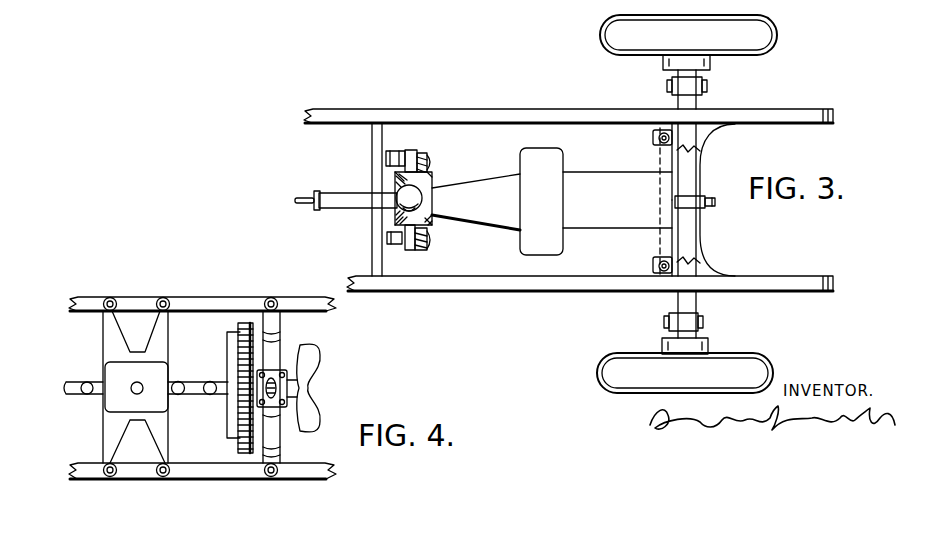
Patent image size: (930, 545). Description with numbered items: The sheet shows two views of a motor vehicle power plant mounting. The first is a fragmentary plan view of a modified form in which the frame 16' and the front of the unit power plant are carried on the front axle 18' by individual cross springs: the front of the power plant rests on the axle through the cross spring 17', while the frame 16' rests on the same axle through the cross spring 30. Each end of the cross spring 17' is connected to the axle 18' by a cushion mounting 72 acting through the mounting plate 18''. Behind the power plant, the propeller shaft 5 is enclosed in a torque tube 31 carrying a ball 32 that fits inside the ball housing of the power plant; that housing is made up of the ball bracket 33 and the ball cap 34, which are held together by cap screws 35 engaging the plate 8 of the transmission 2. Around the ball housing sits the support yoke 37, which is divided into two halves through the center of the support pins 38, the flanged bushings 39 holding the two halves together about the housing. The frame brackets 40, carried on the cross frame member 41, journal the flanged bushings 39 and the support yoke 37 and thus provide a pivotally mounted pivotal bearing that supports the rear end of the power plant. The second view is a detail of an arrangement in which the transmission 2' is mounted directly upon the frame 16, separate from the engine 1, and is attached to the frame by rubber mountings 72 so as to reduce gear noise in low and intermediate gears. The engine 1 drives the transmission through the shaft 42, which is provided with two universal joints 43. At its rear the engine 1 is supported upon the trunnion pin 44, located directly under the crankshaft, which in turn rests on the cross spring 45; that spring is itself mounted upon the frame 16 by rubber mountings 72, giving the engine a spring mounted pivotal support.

In FIG. 3, the engine 1 is at (588, 222).
In FIG. 4, the engine 1 is at (321, 400).
In FIG. 3, the transmission 2 is at (476, 202).
In FIG. 4, the transmission 2' is at (116, 399).
In FIG. 3, the propeller shaft 5 is at (297, 203).
In FIG. 3, the plate 8 is at (432, 222).
In FIG. 4, the frame 16 is at (202, 380).
In FIG. 3, the frame 16' is at (568, 182).
In FIG. 3, the cross spring 17' is at (643, 162).
In FIG. 3, the front axle 18' is at (716, 320).
In FIG. 3, the mounting plate 18'' is at (641, 238).
In FIG. 3, the cross spring 30 is at (688, 100).
In FIG. 3, the torque tube 31 is at (330, 192).
In FIG. 3, the ball 32 is at (395, 210).
In FIG. 3, the ball bracket 33 is at (430, 185).
In FIG. 3, the ball cap 34 is at (395, 182).
In FIG. 3, the cap screws 35 is at (395, 223).
In FIG. 3, the support yoke 37 is at (432, 173).
In FIG. 3, the support pins 38 is at (414, 150).
In FIG. 3, the flanged bushings 39 is at (404, 150).
In FIG. 3, the frame brackets 40 is at (394, 152).
In FIG. 3, the cross frame member 41 is at (371, 175).
In FIG. 4, the shaft 42 is at (196, 383).
In FIG. 4, the universal joints 43 is at (182, 381).
In FIG. 4, the trunnion pin 44 is at (283, 383).
In FIG. 4, the cross spring 45 is at (258, 325).
In FIG. 3, the cushion mounting 72 is at (658, 130).
In FIG. 4, the cushion mounting 72 is at (112, 297).